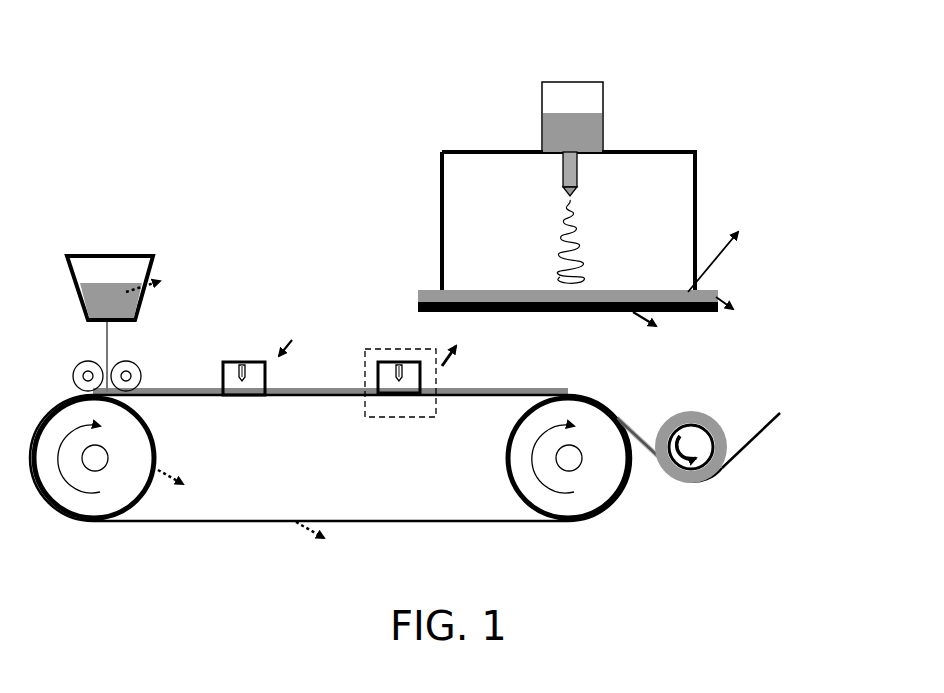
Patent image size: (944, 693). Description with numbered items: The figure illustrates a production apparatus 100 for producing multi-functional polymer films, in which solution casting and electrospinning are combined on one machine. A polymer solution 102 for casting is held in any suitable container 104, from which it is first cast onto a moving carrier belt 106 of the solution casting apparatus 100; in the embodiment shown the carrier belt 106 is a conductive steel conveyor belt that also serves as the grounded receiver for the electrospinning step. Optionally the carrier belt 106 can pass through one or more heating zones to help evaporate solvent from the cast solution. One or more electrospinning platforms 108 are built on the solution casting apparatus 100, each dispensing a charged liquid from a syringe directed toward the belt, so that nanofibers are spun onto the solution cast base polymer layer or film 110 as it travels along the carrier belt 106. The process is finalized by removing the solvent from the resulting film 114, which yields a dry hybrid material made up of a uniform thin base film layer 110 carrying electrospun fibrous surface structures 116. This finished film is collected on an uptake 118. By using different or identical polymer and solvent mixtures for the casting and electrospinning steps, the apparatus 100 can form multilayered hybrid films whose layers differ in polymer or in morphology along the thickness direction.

The apparatus 100 is at (252, 100).
The polymer solution 102 is at (103, 283).
The container 104 is at (123, 257).
The carrier belt 106 is at (172, 523).
The electrospinning platform 108 is at (265, 384).
The solution cast base polymer layer 110 is at (171, 388).
The film 114 is at (604, 122).
The electrospun fibrous surface structures 116 is at (548, 290).
The uptake 118 is at (692, 483).